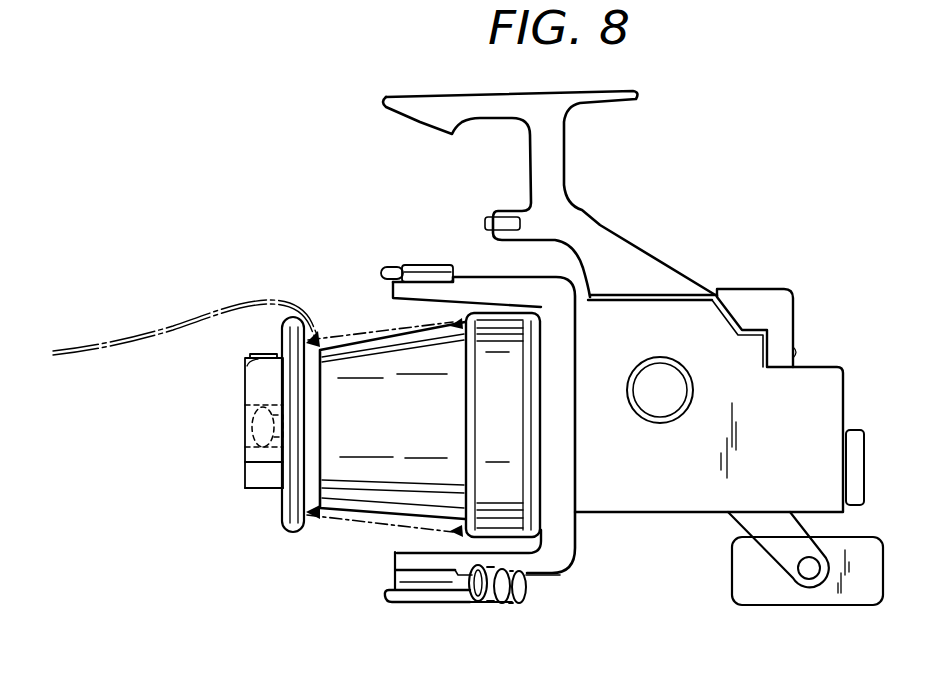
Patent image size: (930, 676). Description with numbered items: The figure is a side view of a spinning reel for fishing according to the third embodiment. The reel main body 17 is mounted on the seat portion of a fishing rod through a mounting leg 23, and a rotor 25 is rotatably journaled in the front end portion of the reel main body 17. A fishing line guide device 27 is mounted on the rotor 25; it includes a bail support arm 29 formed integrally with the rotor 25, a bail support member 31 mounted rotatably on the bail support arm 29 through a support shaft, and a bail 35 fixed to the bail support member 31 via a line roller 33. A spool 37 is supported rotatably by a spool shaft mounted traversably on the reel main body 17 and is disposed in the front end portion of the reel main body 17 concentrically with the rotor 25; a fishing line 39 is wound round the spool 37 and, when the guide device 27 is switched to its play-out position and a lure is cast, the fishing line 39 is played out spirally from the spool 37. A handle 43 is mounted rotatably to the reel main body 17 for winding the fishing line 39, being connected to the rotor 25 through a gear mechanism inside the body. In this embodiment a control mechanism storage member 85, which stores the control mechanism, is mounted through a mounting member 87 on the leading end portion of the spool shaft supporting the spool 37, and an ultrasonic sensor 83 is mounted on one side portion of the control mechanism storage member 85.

The reel main body 17 is at (673, 307).
The mounting leg 23 is at (555, 157).
The rotor 25 is at (567, 536).
The fishing line guide device 27 is at (388, 573).
The bail support arm 29 is at (397, 552).
The bail support member 31 is at (387, 590).
The line roller 33 is at (560, 576).
The bail 35 is at (384, 266).
The spool 37 is at (317, 496).
The fishing line 39 is at (153, 330).
The handle 43 is at (790, 530).
The ultrasonic sensor 83 is at (247, 374).
The control mechanism storage member 85 is at (245, 472).
The mounting member 87 is at (247, 427).